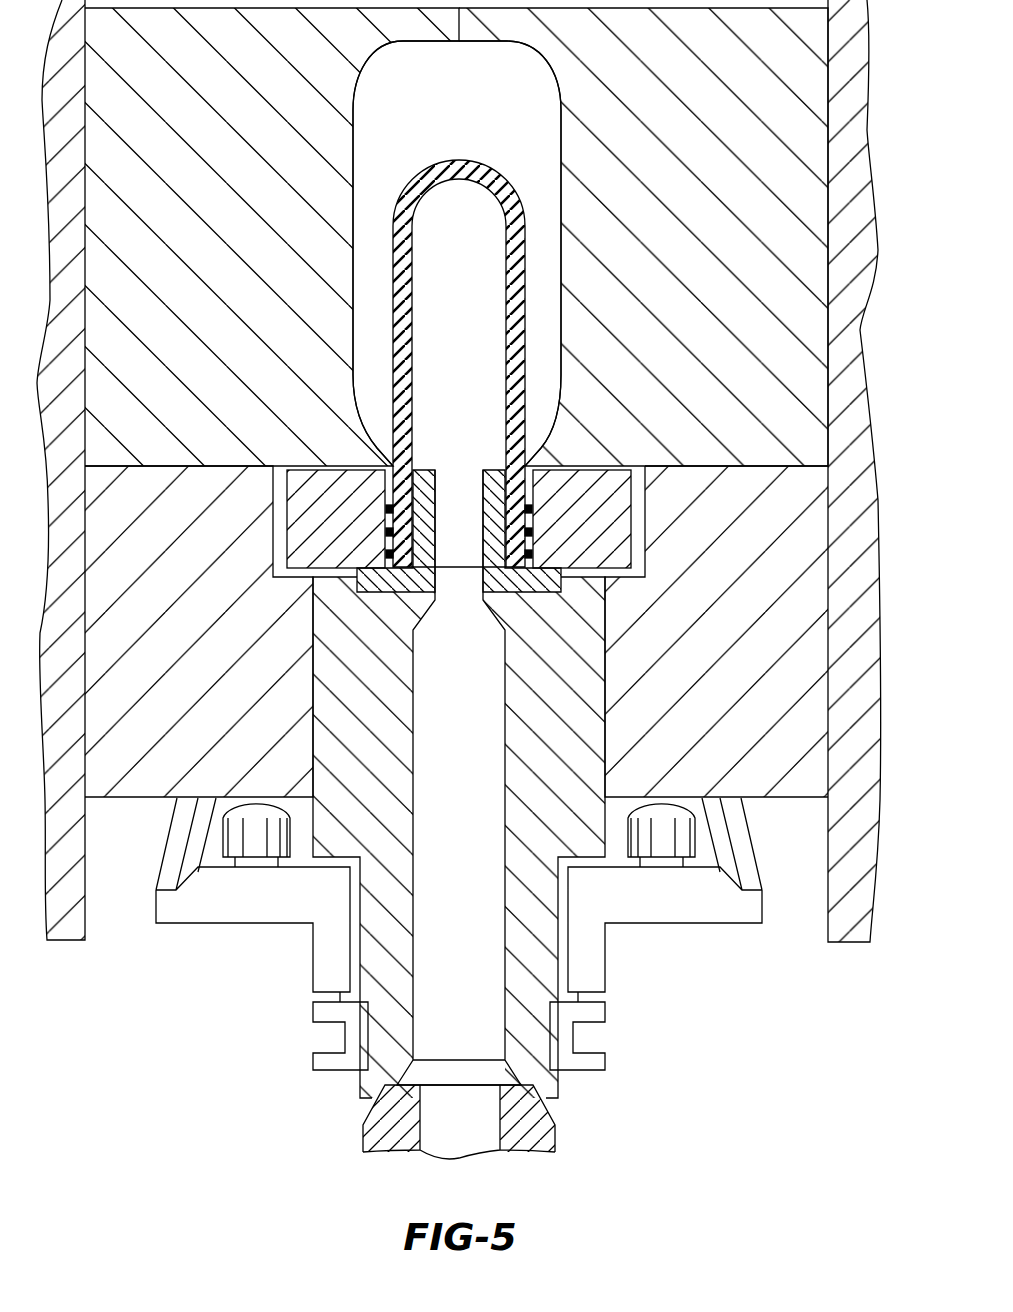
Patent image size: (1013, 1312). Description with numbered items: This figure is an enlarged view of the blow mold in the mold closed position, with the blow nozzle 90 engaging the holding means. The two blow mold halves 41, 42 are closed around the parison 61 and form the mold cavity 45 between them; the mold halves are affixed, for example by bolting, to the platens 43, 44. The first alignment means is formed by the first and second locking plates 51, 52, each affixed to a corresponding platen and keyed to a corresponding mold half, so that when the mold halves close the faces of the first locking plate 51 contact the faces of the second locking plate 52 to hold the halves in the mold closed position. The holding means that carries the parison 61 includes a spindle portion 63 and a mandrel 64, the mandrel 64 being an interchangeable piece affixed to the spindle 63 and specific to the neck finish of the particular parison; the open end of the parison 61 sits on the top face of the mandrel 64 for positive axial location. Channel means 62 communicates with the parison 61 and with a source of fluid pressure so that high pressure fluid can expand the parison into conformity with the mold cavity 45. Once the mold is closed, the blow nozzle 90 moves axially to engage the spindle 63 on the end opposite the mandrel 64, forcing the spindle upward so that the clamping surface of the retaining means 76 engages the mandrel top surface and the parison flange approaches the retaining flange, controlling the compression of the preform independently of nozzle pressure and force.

The blow mold half 41 is at (195, 246).
The blow mold half 42 is at (683, 196).
The platen 43 is at (68, 318).
The platen 44 is at (848, 396).
The mold cavity 45 is at (444, 124).
The first locking plate 51 is at (703, 614).
The second locking plate 52 is at (123, 649).
The parison 61 is at (512, 292).
The channel means 62 is at (438, 951).
The spindle portion 63 is at (530, 958).
The mandrel 64 is at (487, 593).
The retaining means 76 is at (586, 505).
The blow nozzle 90 is at (528, 1123).